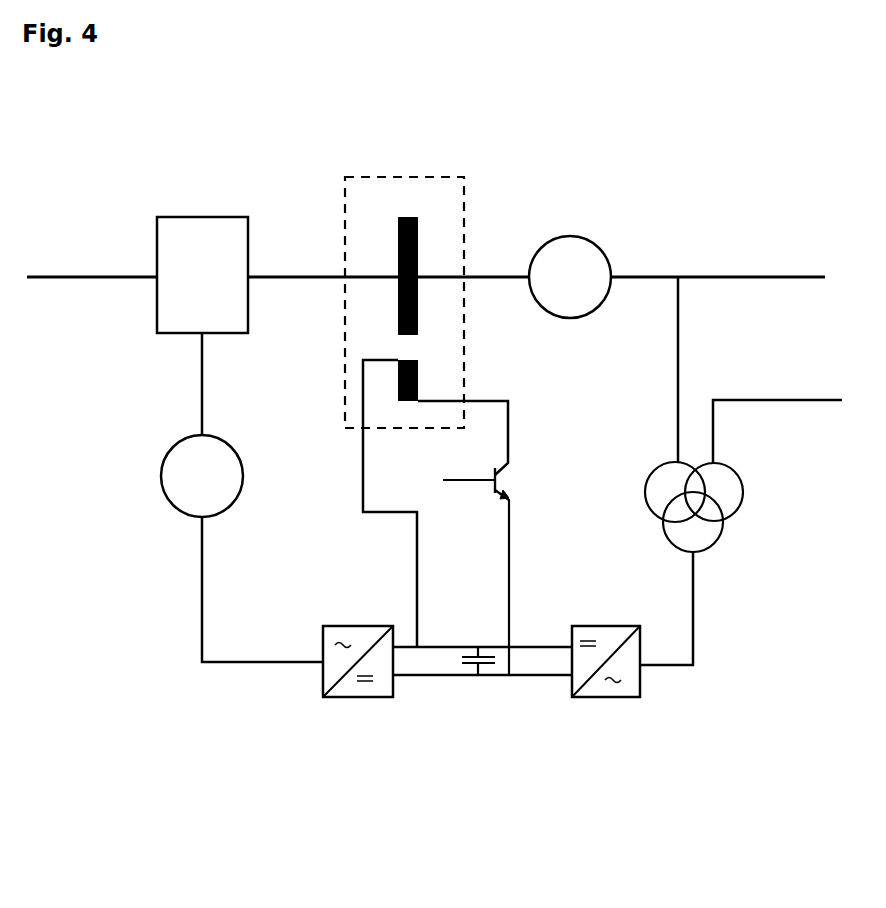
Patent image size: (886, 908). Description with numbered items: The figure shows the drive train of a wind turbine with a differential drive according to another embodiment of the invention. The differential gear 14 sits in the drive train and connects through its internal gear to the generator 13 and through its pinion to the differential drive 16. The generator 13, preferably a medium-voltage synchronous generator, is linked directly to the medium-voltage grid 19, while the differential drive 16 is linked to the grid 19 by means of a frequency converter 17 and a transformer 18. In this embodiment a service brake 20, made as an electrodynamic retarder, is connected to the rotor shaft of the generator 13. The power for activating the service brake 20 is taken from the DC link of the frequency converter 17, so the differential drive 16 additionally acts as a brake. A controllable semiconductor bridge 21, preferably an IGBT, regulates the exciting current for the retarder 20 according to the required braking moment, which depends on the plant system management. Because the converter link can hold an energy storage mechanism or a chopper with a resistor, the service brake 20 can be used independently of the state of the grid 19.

The generator 13 is at (570, 277).
The differential gear 14 is at (207, 253).
The differential drive 16 is at (187, 487).
The frequency converter 17 is at (482, 719).
The transformer 18 is at (705, 535).
The medium-voltage grid 19 is at (772, 276).
The service brake 20 is at (448, 232).
The controllable semiconductor bridge 21 is at (473, 482).